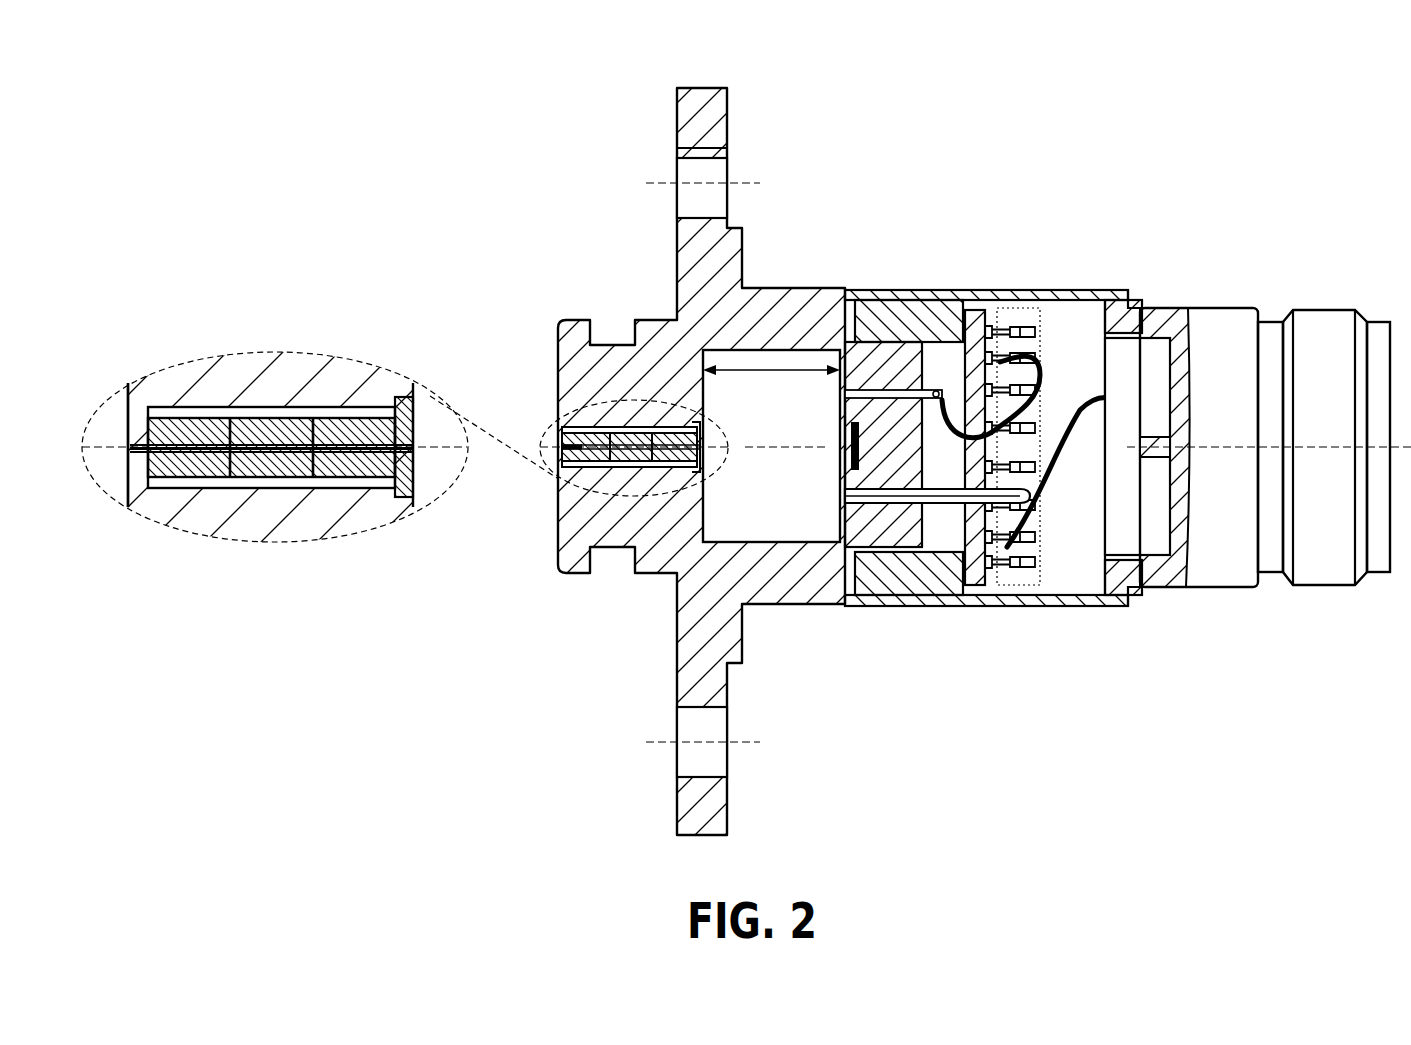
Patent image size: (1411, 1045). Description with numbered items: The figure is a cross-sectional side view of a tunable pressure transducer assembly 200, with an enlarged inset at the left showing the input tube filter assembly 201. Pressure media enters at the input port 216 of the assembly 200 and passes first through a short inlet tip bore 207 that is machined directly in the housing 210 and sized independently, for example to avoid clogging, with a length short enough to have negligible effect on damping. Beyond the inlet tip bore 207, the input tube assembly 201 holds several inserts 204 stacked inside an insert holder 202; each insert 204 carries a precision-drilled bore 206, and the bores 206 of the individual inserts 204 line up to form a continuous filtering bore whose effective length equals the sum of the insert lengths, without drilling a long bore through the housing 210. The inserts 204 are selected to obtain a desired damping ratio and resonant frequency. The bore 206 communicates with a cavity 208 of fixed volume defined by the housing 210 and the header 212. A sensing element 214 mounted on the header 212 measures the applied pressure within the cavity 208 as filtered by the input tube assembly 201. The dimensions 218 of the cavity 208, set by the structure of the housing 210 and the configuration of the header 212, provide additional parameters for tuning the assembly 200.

The tunable pressure transducer assembly 200 is at (624, 106).
The input tube filter assembly 201 is at (280, 457).
The insert holder 202 is at (398, 432).
The inserts 204 is at (183, 465).
The bore 206 is at (387, 450).
The inlet tip bore 207 is at (133, 452).
The cavity 208 is at (745, 488).
The housing 210 is at (763, 318).
The header 212 is at (893, 525).
The sensing element 214 is at (868, 440).
The input port 216 is at (512, 479).
The dimensions of the cavity 218 is at (770, 373).